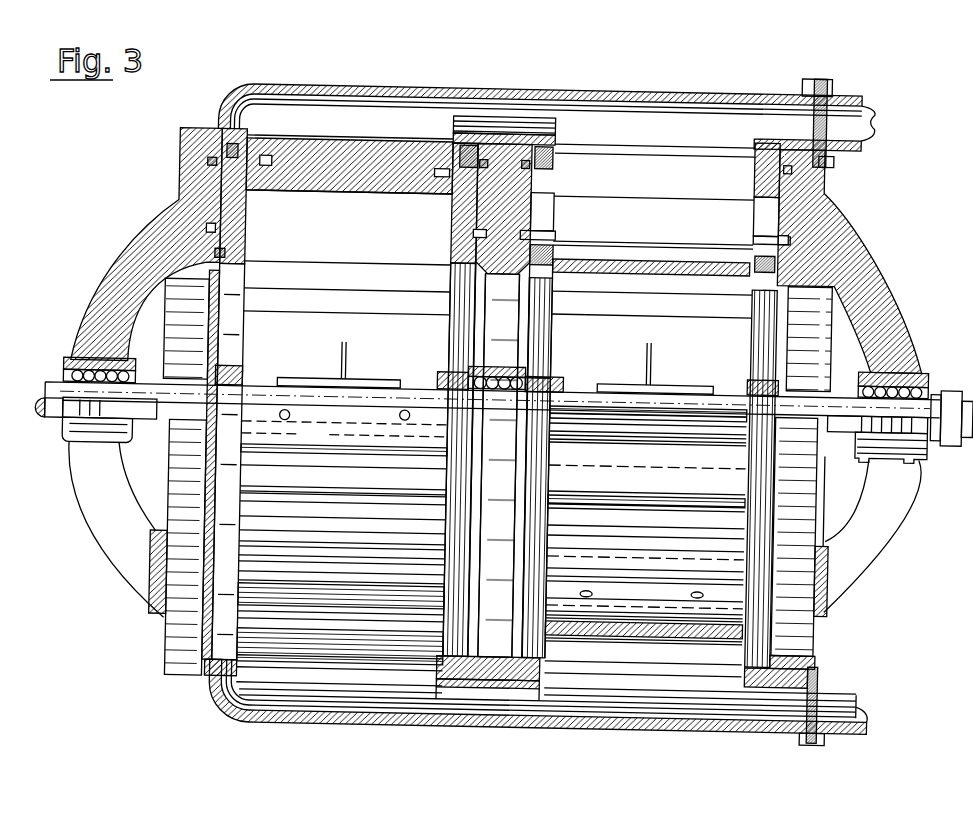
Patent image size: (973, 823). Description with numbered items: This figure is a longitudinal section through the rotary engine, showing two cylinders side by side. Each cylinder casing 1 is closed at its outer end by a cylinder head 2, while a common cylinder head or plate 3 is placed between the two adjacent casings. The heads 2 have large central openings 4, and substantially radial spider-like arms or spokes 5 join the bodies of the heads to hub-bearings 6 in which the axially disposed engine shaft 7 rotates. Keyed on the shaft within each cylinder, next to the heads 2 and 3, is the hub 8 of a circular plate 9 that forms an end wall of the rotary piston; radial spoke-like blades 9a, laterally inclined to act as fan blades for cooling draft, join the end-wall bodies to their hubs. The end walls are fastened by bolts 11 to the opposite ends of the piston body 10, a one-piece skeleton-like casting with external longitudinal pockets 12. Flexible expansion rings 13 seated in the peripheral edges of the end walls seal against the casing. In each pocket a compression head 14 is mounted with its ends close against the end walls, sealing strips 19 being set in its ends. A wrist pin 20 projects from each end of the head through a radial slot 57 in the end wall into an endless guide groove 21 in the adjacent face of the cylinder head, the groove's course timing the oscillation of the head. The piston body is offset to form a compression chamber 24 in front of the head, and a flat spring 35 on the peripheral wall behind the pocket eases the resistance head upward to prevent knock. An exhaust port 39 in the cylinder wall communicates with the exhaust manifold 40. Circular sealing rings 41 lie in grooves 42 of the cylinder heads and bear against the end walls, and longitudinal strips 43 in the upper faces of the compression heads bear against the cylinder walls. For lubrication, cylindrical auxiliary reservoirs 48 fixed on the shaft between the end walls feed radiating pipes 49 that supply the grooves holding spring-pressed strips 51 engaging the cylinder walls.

The cylinder casing 1 is at (632, 145).
The cylinder head 2 is at (173, 196).
The cylinder head or plate 3 is at (497, 690).
The central opening 4 is at (170, 334).
The spider-like arms or spokes 5 is at (95, 326).
The hub-bearing 6 is at (68, 436).
The engine shaft 7 is at (48, 395).
The hub 8 is at (240, 376).
The circular plate (piston end wall) 9 is at (236, 242).
The spoke-like blades 9a is at (548, 306).
The piston body 10 is at (345, 195).
The bolts 11 is at (263, 196).
The pocket 12 is at (687, 152).
The flexible expansion rings 13 is at (228, 500).
The compression head 14 is at (670, 268).
The strips 19 is at (343, 497).
The wrist pin 20 is at (545, 233).
The guide groove 21 is at (203, 233).
The open space or chamber 24 is at (611, 434).
The flat spring 35 is at (342, 449).
The exhaust port 39 is at (345, 128).
The exhaust manifold 40 is at (383, 110).
The circular strips or rings 41 is at (205, 165).
The grooves 42 is at (204, 168).
The longitudinal strips 43 is at (700, 666).
The auxiliary reservoir 48 is at (305, 383).
The feed pipes 49 is at (345, 363).
The spring-pressed strips 51 is at (641, 496).
The radial slots 57 is at (545, 210).